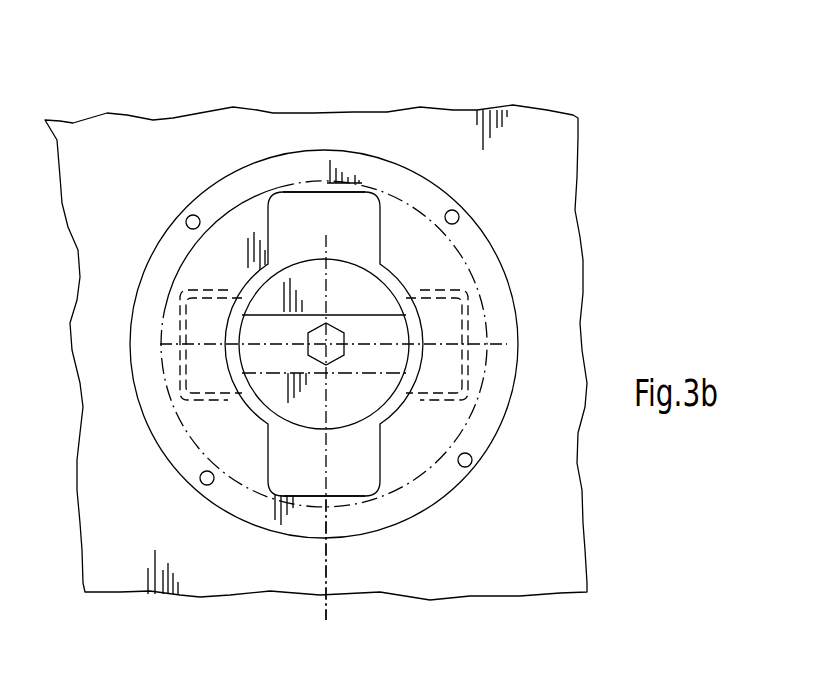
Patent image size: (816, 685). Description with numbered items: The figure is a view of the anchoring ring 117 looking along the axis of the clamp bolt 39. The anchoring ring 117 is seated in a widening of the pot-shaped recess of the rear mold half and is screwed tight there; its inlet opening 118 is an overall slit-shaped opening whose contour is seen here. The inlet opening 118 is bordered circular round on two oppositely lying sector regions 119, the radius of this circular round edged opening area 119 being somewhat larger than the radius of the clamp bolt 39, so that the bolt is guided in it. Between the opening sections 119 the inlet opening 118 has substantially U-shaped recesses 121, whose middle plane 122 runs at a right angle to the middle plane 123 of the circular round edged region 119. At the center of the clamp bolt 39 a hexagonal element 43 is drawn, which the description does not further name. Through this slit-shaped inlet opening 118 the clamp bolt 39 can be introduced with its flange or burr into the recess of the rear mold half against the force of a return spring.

The anchoring ring 117 is at (400, 183).
The inlet opening 118 is at (262, 207).
The U-shaped recesses 121 is at (319, 190).
The circular round edged opening area 119 is at (252, 266).
The middle plane of the circular round edged region 123 is at (486, 342).
The clamp bolt 39 is at (368, 393).
The hexagonal shaft end 43 is at (330, 340).
The middle plane of the U-shaped recesses 122 is at (322, 617).